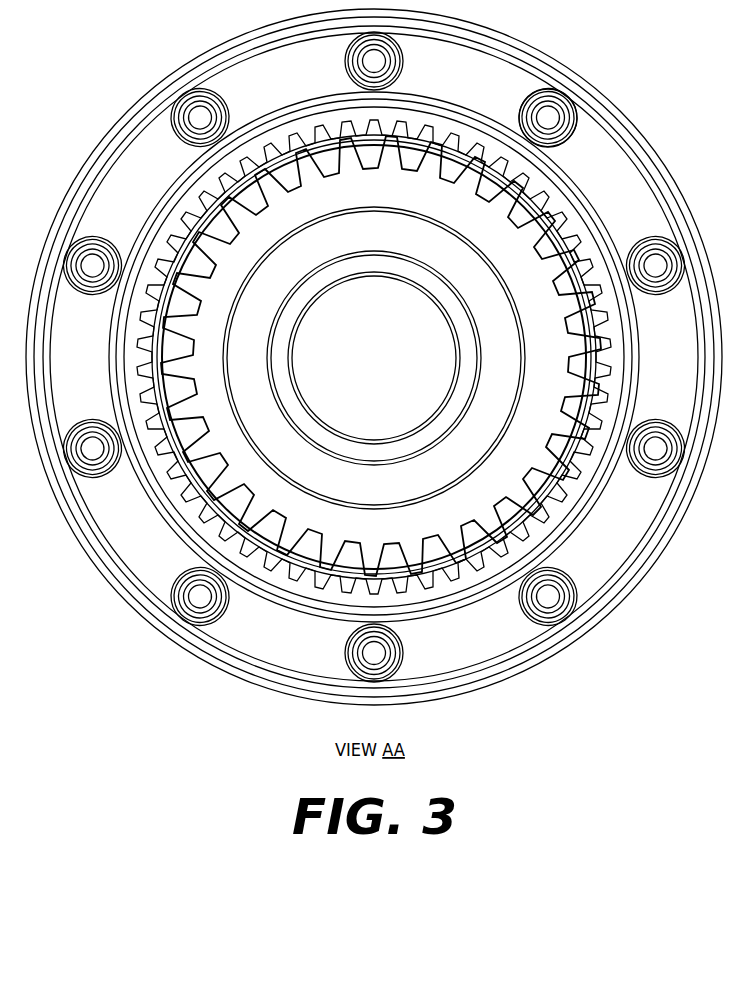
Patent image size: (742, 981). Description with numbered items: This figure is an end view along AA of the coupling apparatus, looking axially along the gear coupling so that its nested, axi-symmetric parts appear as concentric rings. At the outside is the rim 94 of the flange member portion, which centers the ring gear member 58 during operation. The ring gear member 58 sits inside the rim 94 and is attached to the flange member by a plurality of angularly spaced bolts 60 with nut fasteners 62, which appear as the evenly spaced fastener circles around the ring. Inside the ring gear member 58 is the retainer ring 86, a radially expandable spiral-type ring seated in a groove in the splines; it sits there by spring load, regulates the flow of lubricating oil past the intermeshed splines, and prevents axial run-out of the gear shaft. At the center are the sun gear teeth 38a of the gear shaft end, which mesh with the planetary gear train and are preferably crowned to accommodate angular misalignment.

The sun gear teeth 38a is at (580, 352).
The ring gear member 58 is at (608, 474).
The bolts 60 is at (560, 122).
The nut fasteners 62 is at (556, 98).
The retainer ring 86 is at (604, 530).
The rim 94 is at (668, 163).